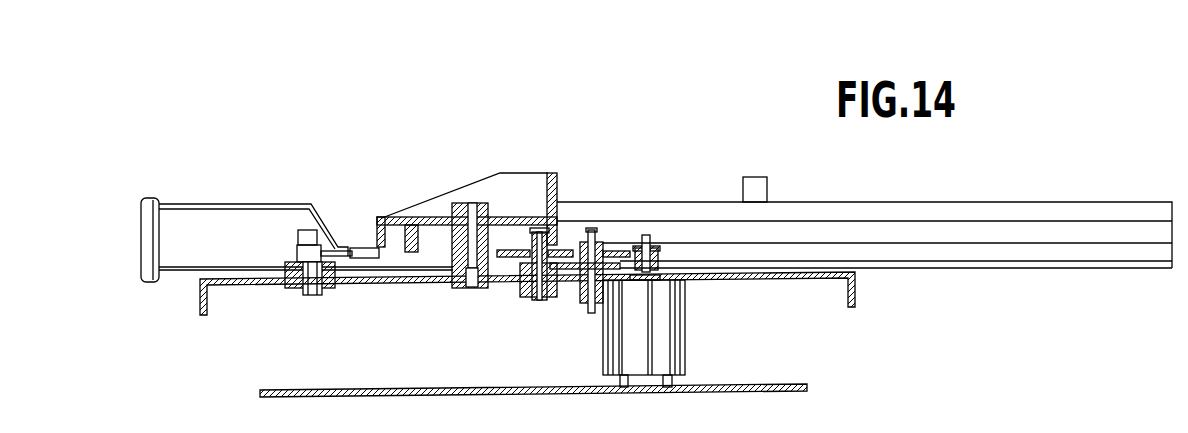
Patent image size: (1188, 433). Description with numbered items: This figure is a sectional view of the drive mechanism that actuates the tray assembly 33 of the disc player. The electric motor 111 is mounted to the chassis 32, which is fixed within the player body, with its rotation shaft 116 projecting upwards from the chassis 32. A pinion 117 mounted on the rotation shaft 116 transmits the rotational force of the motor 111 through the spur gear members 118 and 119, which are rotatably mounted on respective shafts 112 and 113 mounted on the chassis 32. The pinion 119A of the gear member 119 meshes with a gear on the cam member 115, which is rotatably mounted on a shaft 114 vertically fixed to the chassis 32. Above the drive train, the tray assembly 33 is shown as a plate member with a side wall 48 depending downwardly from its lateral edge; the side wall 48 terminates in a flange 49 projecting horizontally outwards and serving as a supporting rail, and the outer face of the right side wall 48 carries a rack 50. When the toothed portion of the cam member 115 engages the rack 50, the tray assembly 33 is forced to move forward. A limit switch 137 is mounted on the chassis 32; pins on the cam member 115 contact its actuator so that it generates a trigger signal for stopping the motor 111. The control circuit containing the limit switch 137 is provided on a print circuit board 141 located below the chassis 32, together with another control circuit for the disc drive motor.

The tray assembly 33 is at (250, 201).
The limit switch 137 is at (296, 247).
The chassis 32 is at (392, 286).
The print circuit board 141 is at (475, 388).
The shaft 114 is at (432, 200).
The cam member 115 is at (501, 171).
The shaft 113 is at (536, 210).
The pinion 119A is at (560, 240).
The spur gear member 119 is at (570, 250).
The spur gear member 118 is at (615, 250).
The shaft 112 is at (596, 235).
The rotation shaft 116 is at (640, 255).
The pinion 117 is at (672, 245).
The side wall 48 is at (1063, 202).
The rack 50 is at (946, 236).
The flange 49 is at (1020, 262).
The electric motor 111 is at (688, 322).